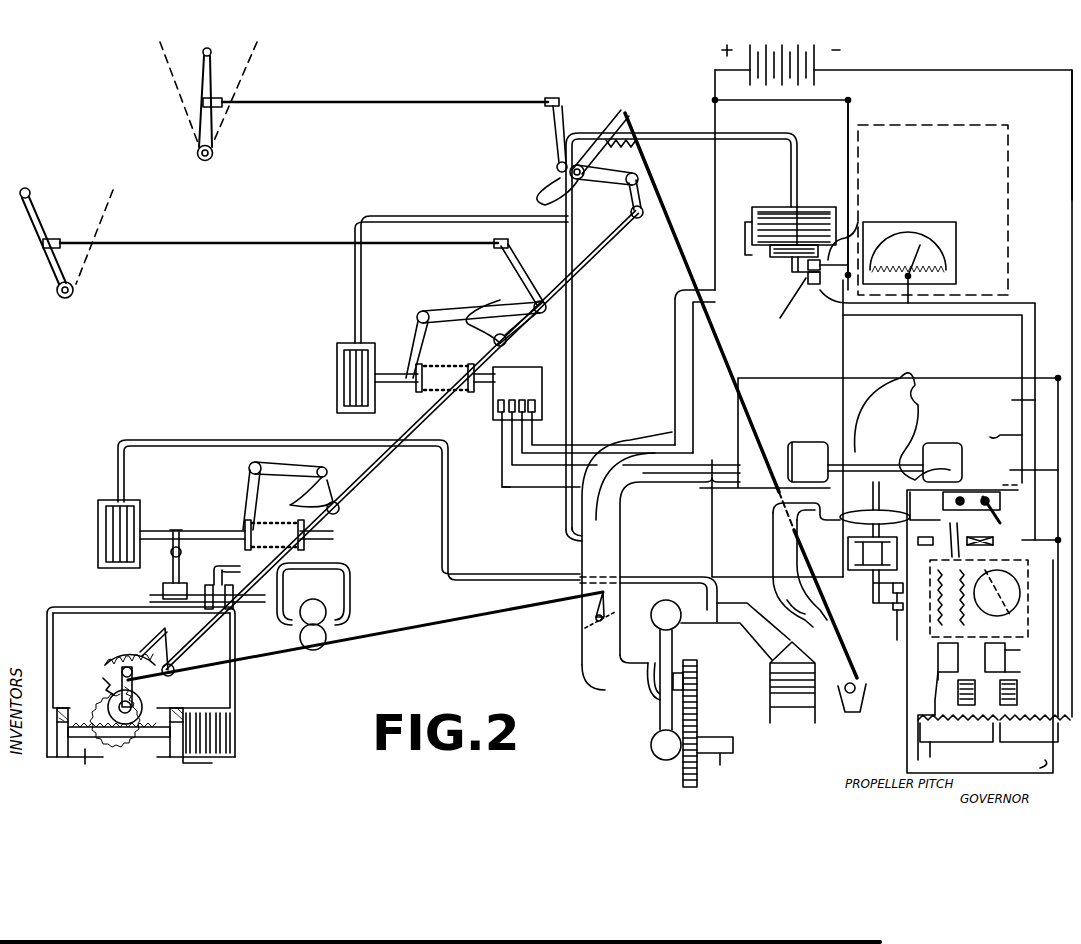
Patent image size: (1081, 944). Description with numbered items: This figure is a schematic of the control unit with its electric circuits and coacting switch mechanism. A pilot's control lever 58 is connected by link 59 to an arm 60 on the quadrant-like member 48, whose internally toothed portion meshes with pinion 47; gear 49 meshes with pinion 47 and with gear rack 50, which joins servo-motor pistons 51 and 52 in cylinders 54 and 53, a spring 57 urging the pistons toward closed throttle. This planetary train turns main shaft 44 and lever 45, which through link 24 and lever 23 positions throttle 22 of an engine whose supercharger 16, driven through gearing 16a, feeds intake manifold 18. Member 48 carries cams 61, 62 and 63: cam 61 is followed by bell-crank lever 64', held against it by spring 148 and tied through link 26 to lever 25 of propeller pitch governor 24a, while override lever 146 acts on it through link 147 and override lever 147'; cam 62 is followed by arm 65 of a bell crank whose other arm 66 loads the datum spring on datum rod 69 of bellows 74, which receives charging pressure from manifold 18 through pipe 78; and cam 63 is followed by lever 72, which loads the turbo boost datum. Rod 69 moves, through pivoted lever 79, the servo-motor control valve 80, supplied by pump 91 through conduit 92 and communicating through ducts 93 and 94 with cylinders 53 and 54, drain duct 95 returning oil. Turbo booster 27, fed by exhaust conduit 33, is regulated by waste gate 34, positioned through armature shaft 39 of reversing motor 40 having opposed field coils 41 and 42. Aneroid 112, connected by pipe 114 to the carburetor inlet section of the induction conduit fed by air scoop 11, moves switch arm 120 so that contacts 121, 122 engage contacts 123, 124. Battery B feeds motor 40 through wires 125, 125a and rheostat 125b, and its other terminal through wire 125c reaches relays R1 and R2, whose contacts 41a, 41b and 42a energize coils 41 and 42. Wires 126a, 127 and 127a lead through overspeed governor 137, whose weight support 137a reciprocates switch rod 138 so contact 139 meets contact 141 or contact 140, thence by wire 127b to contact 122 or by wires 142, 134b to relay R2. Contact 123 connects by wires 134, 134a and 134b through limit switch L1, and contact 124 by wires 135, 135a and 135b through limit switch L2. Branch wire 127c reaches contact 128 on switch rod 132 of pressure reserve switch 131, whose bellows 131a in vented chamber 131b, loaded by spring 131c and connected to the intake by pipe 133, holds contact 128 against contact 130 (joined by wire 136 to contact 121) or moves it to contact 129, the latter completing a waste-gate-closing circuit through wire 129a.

The propeller override lever 146 is at (206, 84).
The link 147 is at (390, 93).
The override lever 147' is at (535, 139).
The cam 61 is at (636, 195).
The spring 148 is at (645, 145).
The bell-crank lever 64' is at (610, 205).
The lever 25 is at (858, 683).
The main shaft 44 is at (388, 470).
The control lever 58 is at (36, 210).
The link 59 is at (196, 240).
The cam 63 is at (513, 295).
The pivoted lever 72 is at (427, 340).
The bellows or aneroid 112 is at (339, 359).
The switch arm 120 is at (522, 380).
The contact 122 is at (512, 403).
The contact 124 is at (532, 403).
The contact 123 is at (500, 405).
The contact 121 is at (512, 416).
The pressure-transmitting pipe 114 is at (405, 214).
The pipe 133 is at (664, 131).
The pressure-transmitting pipe 78 is at (195, 440).
The sealed corrugated bellows 74 is at (125, 508).
The datum rod 69 is at (196, 535).
The arm 65 is at (278, 465).
The arm 66 is at (243, 492).
The cam 62 is at (320, 493).
The pivoted lever 79 is at (160, 568).
The servo-motor control valve 80 is at (160, 594).
The drain duct 95 is at (272, 600).
The pipe or conduit 92 is at (353, 580).
The pump 91 is at (313, 598).
The duct 93 is at (50, 645).
The duct 94 is at (236, 685).
The member 48 is at (138, 648).
The arm 60 is at (168, 655).
The spur gear or pinion 47 is at (120, 675).
The gear 49 is at (105, 688).
The lever 45 is at (150, 695).
The cylinder 53 is at (88, 760).
The servo-motor piston 52 is at (60, 757).
The gear rack 50 is at (145, 740).
The spring 57 is at (228, 726).
The cylinder 54 is at (237, 755).
The servo-motor piston 51 is at (205, 763).
The link 24 is at (440, 628).
The lever 23 is at (605, 604).
The throttle 22 is at (580, 648).
The wire 135 is at (600, 452).
The wire 136 is at (675, 300).
The wire 134 is at (501, 490).
The wire 127b is at (735, 552).
The battery B is at (768, 48).
The wire 125 is at (718, 120).
The wire 126a is at (848, 100).
The wire 125c is at (1000, 72).
The wire 127 is at (850, 183).
The pressure reserve switch 131 is at (770, 210).
The bellows 131a is at (805, 218).
The chamber 131b is at (745, 228).
The spring 131c is at (770, 248).
The contact 128 is at (790, 265).
The switch rod 132 is at (806, 276).
The contact 129 is at (855, 225).
The speed adjusting rheostat 125b is at (935, 245).
The contact 130 is at (780, 318).
The branch wire 127c is at (778, 334).
The wire 129a is at (800, 328).
The wire 127a is at (845, 347).
The air inlet or scoop 11 is at (910, 400).
The link 26 is at (752, 418).
The turbo-type supercharger 27 is at (912, 455).
The support 137a is at (797, 516).
The overspeed governor 137 is at (847, 553).
The exhaust conduit 33 is at (780, 561).
The wire 125a is at (1012, 400).
The wire 135a is at (996, 427).
The wire 134a is at (1016, 472).
The waste or blast gate 34 is at (1022, 487).
The limit switch L2 is at (955, 524).
The limit switch L1 is at (1002, 508).
The motor 40 is at (992, 536).
The field coil 41 is at (960, 622).
The field coil 42 is at (935, 655).
The fixed contact 42a is at (965, 680).
The armature shaft 39 is at (1002, 657).
The fixed contact 41a is at (1028, 644).
The movable contact 41b is at (1028, 672).
The relay R2 is at (958, 733).
The relay R1 is at (1035, 733).
The wire 142 is at (917, 705).
The contact 139 is at (890, 600).
The contact 140 is at (897, 630).
The switch rod 138 is at (780, 596).
The contact 141 is at (800, 612).
The intake manifold 18 is at (728, 624).
The propeller pitch governor 24a is at (840, 712).
The supercharger 16 is at (672, 685).
The gearing 16a is at (698, 720).
The wire 135b is at (927, 760).
The wire 134b is at (1007, 769).